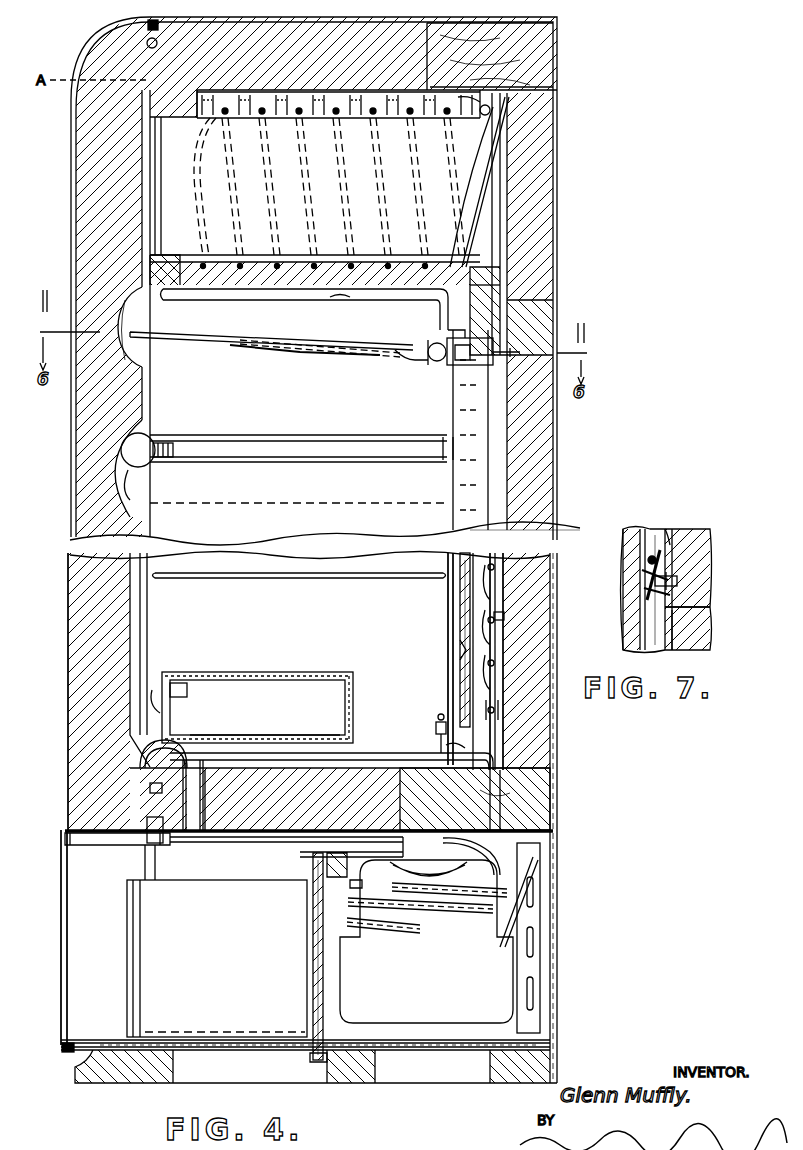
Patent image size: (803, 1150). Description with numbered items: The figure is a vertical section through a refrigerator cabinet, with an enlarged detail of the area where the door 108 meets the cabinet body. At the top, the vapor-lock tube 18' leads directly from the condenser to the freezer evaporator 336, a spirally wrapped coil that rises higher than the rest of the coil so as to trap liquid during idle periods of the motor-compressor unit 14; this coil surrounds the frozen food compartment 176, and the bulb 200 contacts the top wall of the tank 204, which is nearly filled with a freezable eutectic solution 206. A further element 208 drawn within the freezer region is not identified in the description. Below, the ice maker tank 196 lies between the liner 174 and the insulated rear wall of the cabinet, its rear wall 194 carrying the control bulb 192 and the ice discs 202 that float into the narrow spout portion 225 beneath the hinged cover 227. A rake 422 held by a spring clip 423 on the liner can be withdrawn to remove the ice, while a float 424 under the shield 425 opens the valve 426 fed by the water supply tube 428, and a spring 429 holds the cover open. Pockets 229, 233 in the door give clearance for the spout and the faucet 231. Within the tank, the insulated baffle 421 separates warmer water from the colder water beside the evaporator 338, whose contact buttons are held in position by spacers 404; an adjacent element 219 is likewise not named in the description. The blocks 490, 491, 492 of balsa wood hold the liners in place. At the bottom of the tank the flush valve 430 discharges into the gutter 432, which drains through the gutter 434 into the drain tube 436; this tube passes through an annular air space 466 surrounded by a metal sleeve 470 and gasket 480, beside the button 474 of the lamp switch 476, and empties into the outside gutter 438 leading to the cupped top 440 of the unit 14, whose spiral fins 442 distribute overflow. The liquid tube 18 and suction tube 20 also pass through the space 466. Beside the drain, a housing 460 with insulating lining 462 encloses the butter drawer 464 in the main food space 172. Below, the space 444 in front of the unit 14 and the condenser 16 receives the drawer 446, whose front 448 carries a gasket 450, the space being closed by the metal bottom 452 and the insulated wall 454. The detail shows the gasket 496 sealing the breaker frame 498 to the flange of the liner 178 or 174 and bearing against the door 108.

In FIG. 4, the breaker frame 498 is at (150, 40).
In FIG. 7, the breaker frame 498 is at (693, 543).
In FIG. 4, the block 492 is at (495, 30).
In FIG. 4, the vapor-lock tube 18' is at (512, 77).
In FIG. 4, the bulb 200 is at (490, 112).
In FIG. 4, the tank 204 is at (255, 90).
In FIG. 4, the freezable solution 206 is at (345, 95).
In FIG. 4, the freezer evaporator 336 is at (415, 102).
In FIG. 4, the air guide 208 is at (352, 120).
In FIG. 4, the liner 178 is at (178, 120).
In FIG. 7, the liner 178 is at (728, 650).
In FIG. 4, the frozen food compartment 176 is at (315, 230).
In FIG. 4, the block 491 is at (505, 277).
In FIG. 4, the rake 422 is at (285, 303).
In FIG. 4, the spring clip 423 is at (330, 303).
In FIG. 4, the float 424 is at (428, 345).
In FIG. 4, the valve 426 is at (470, 352).
In FIG. 4, the spring 429 is at (460, 340).
In FIG. 4, the water supply tube 428 is at (520, 352).
In FIG. 4, the hinged cover 227 is at (205, 333).
In FIG. 4, the spout portion 225 is at (305, 357).
In FIG. 4, the ice discs 202 is at (255, 352).
In FIG. 4, the shield 425 is at (403, 360).
In FIG. 4, the pocket 229 is at (122, 372).
In FIG. 4, the faucet 231 is at (125, 440).
In FIG. 4, the pocket 233 is at (125, 515).
In FIG. 4, the ice maker tank 196 is at (316, 469).
In FIG. 4, the rear wall 194 is at (495, 468).
In FIG. 4, the bulb 192 is at (545, 530).
In FIG. 4, the door 108 is at (93, 691).
In FIG. 7, the door 108 is at (627, 557).
In FIG. 4, the main food space 172 is at (299, 599).
In FIG. 4, the baffle 421 is at (462, 592).
In FIG. 4, the liner 174 is at (450, 622).
In FIG. 7, the liner 174 is at (716, 633).
In FIG. 4, the channel 219 is at (505, 610).
In FIG. 7, the channel 219 is at (606, 588).
In FIG. 4, the evaporator 338 is at (505, 628).
In FIG. 7, the evaporator 338 is at (607, 618).
In FIG. 4, the spacers 404 is at (500, 715).
In FIG. 4, the housing 460 is at (212, 676).
In FIG. 4, the insulating lining 462 is at (278, 677).
In FIG. 4, the drawer 464 is at (265, 720).
In FIG. 4, the gutter 434 is at (362, 745).
In FIG. 4, the drain or flush valve 430 is at (435, 725).
In FIG. 4, the gutter 432 is at (430, 752).
In FIG. 4, the suction tube 20 is at (495, 760).
In FIG. 4, the annular air space 466 is at (150, 781).
In FIG. 4, the metal sleeve 470 is at (150, 788).
In FIG. 4, the drain tube 436 is at (210, 790).
In FIG. 4, the gasket 480 is at (208, 808).
In FIG. 4, the button 474 is at (110, 838).
In FIG. 4, the cupped top 440 is at (482, 800).
In FIG. 4, the block 490 is at (497, 788).
In FIG. 4, the switch 476 is at (147, 840).
In FIG. 4, the space 444 is at (165, 862).
In FIG. 4, the outside gutter 438 is at (262, 852).
In FIG. 4, the external fins 442 is at (313, 880).
In FIG. 4, the insulated wall 454 is at (322, 968).
In FIG. 4, the drawer 446 is at (235, 969).
In FIG. 4, the front 448 is at (65, 945).
In FIG. 4, the motor-compressor unit 14 is at (445, 977).
In FIG. 4, the liquid tube 18 is at (512, 892).
In FIG. 4, the condenser 16 is at (535, 900).
In FIG. 4, the gasket 450 is at (68, 1055).
In FIG. 4, the metal bottom 452 is at (203, 1052).
In FIG. 7, the gasket 496 is at (660, 563).